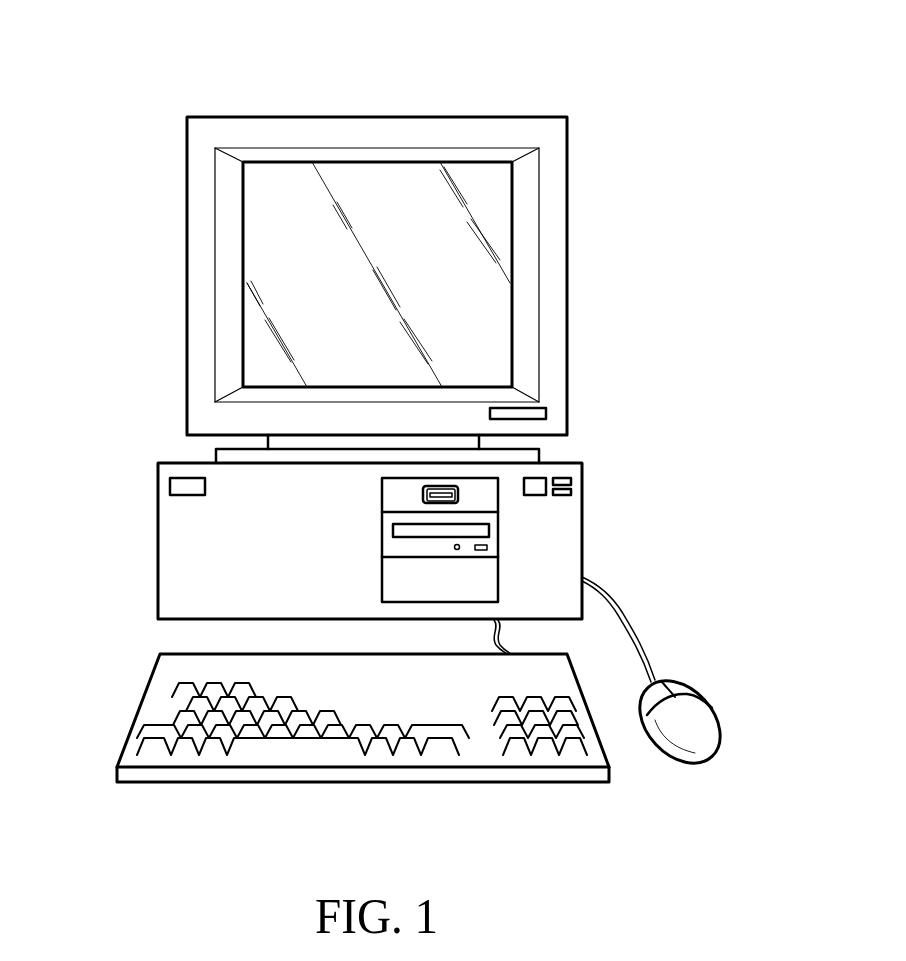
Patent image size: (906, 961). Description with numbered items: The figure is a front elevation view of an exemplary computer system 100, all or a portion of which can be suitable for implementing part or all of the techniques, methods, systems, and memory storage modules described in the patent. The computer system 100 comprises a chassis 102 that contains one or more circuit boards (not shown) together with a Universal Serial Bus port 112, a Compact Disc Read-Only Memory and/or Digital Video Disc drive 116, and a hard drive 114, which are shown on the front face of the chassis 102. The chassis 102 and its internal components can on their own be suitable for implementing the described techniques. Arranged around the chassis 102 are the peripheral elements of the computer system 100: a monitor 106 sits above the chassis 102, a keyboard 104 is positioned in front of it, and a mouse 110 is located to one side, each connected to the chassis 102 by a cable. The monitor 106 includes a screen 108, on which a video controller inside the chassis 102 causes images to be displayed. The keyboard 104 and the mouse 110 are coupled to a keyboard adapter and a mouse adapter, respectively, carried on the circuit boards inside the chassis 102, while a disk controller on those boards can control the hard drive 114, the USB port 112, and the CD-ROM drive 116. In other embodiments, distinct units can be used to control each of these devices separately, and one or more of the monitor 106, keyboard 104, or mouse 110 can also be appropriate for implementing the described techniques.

The computer system 100 is at (558, 95).
The chassis 102 is at (158, 542).
The keyboard 104 is at (140, 703).
The monitor 106 is at (262, 117).
The screen 108 is at (292, 280).
The mouse 110 is at (700, 712).
The Universal Serial Bus (USB) port 112 is at (460, 492).
The hard drive 114 is at (492, 578).
The CD-ROM and/or DVD drive 116 is at (491, 535).